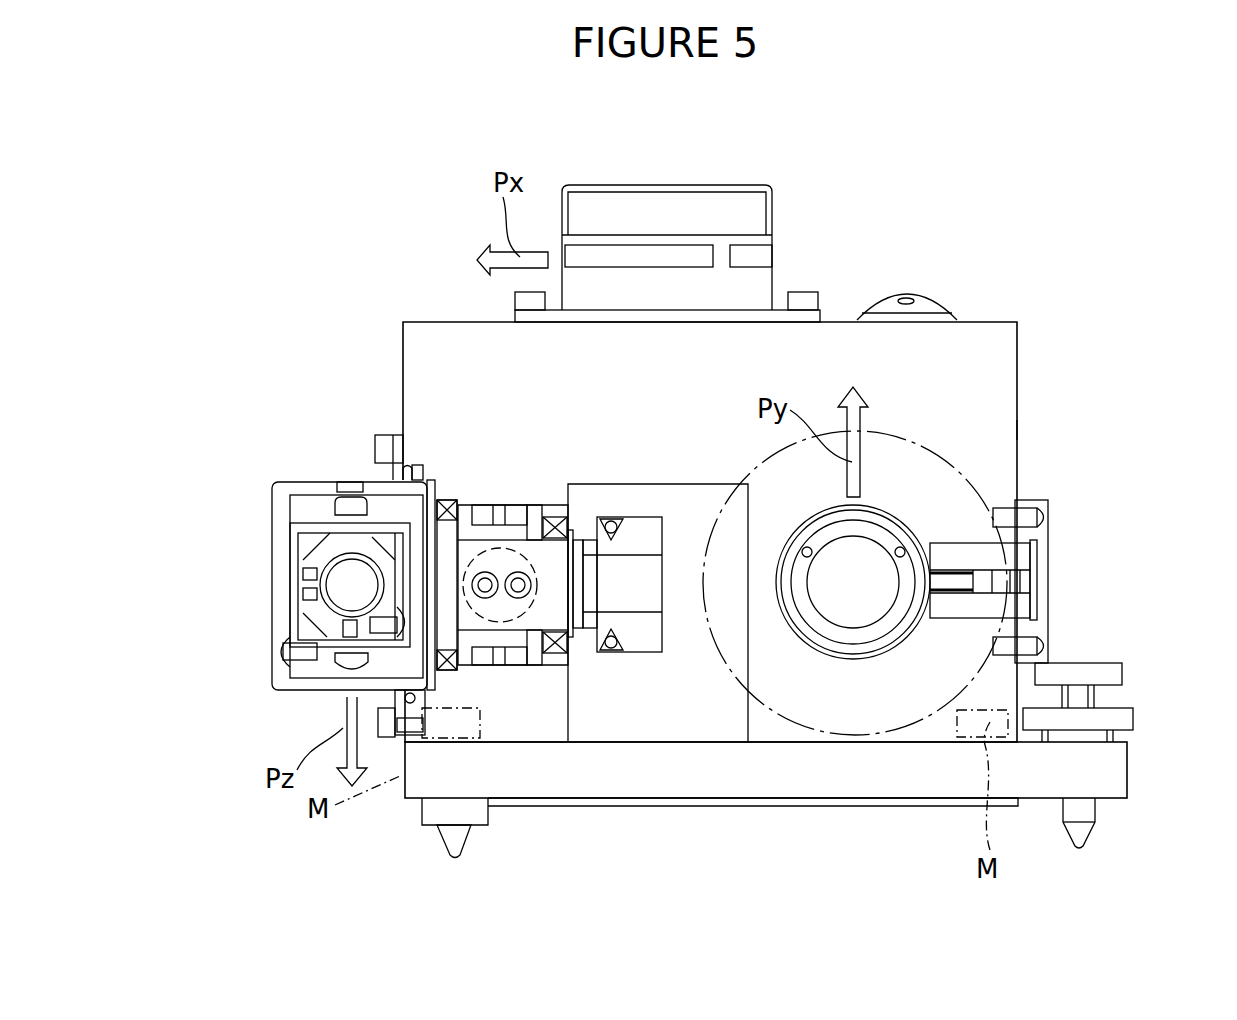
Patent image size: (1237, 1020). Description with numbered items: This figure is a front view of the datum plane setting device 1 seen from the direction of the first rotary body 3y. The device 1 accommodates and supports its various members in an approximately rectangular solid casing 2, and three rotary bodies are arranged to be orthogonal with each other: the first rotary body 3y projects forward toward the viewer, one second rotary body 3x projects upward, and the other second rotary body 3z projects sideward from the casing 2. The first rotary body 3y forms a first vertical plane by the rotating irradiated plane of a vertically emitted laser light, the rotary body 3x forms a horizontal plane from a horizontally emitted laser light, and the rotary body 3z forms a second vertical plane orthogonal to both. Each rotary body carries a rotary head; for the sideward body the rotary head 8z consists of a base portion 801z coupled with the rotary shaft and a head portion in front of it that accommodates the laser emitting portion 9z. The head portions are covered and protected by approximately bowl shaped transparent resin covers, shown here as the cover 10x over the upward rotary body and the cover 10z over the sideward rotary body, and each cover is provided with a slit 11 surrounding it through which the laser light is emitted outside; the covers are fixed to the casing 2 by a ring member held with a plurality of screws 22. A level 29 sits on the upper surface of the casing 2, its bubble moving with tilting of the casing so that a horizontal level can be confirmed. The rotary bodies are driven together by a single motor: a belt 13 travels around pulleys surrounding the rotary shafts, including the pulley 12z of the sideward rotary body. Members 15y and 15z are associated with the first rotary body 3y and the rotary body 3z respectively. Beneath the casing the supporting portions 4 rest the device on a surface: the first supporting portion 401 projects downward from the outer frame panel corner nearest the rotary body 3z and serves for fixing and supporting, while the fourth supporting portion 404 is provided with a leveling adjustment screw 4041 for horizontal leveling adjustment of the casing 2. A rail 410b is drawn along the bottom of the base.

The datum plane setting device 1 is at (1032, 348).
The casing 2 is at (1017, 430).
The second rotary body 3x is at (740, 274).
The first rotary body 3y is at (862, 603).
The second rotary body 3z is at (270, 563).
The supporting portion 4 is at (1115, 773).
The first supporting portion 401 is at (458, 835).
The fourth supporting portion 404 is at (1080, 812).
The leveling adjustment screw 4041 is at (1110, 672).
The rail 410b is at (677, 815).
The rotary head 8z is at (442, 535).
The base portion 801z is at (552, 557).
The laser emitting portion 9z is at (347, 588).
The cover 10x is at (775, 210).
The cover 10z is at (292, 690).
The slit 11 is at (625, 252).
The pulley 12z is at (640, 530).
The belt 13 is at (608, 650).
The Y-axis clamp 15y is at (1040, 580).
The Z-axis clamp 15z is at (443, 730).
The screw 22 is at (522, 300).
The level 29 is at (922, 308).